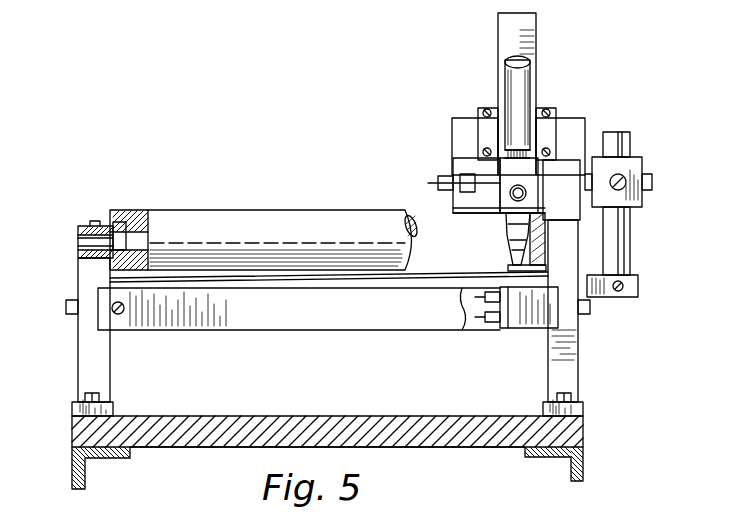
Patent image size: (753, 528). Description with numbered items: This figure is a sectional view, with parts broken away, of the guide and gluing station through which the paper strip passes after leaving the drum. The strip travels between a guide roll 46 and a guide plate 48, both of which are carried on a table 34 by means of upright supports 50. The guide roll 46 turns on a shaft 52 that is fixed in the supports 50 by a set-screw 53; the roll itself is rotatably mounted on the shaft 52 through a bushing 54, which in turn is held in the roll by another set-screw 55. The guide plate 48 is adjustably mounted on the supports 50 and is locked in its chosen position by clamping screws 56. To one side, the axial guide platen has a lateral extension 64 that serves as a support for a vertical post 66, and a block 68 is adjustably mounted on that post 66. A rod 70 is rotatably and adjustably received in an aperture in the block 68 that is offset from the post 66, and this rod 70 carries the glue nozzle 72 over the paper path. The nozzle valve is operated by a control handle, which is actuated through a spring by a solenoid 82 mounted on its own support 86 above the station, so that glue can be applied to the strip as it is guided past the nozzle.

The table 34 is at (162, 434).
The guide roll 46 is at (234, 218).
The guide plate 48 is at (244, 290).
The supports 50 is at (88, 344).
The shaft 52 is at (78, 241).
The set-screw 53 is at (96, 226).
The bushing 54 is at (118, 224).
The set-screw 55 is at (122, 212).
The clamping screws 56 is at (538, 306).
The lateral extension 64 is at (605, 298).
The post 66 is at (615, 233).
The block 68 is at (635, 160).
The rod 70 is at (652, 182).
The glue nozzle 72 is at (510, 251).
The solenoid 82 is at (510, 30).
The support 86 is at (568, 130).